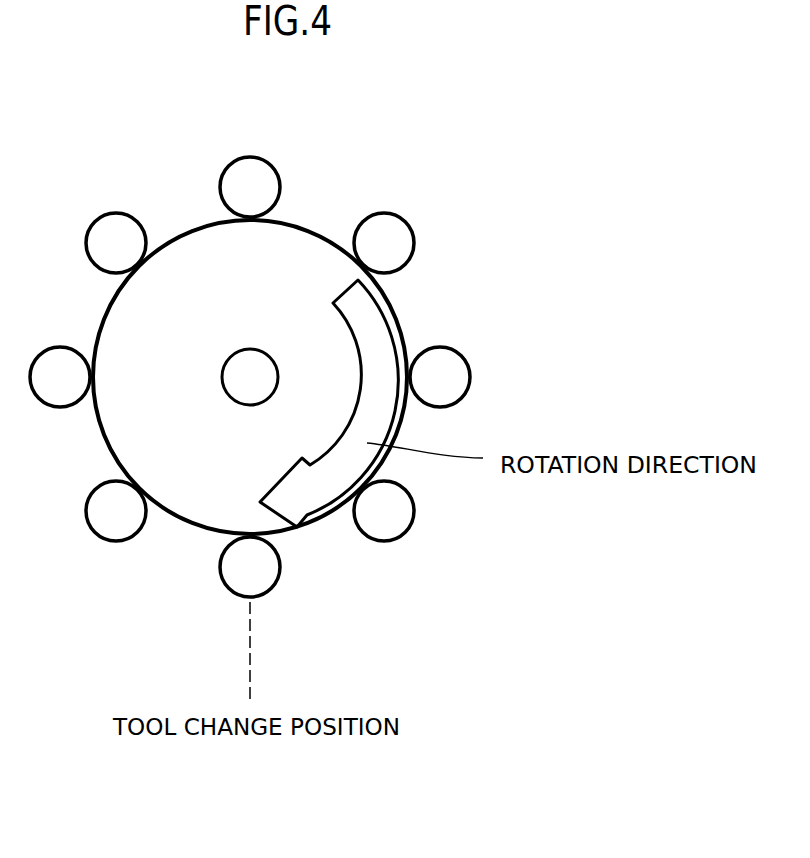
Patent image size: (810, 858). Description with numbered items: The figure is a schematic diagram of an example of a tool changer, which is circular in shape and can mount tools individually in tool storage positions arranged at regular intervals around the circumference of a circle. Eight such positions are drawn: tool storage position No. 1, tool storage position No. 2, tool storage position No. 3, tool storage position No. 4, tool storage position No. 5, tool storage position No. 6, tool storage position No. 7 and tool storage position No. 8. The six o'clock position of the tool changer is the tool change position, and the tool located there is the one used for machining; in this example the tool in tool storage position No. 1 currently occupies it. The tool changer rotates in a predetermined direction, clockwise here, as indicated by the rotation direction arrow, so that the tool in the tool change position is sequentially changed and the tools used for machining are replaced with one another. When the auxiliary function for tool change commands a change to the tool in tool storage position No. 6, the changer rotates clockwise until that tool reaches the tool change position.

The tool storage position No. 1 is at (250, 567).
The tool storage position No. 2 is at (116, 511).
The tool storage position No. 3 is at (60, 377).
The tool storage position No. 4 is at (116, 243).
The tool storage position No. 5 is at (250, 187).
The tool storage position No. 6 is at (384, 243).
The tool storage position No. 7 is at (440, 377).
The tool storage position No. 8 is at (384, 511).